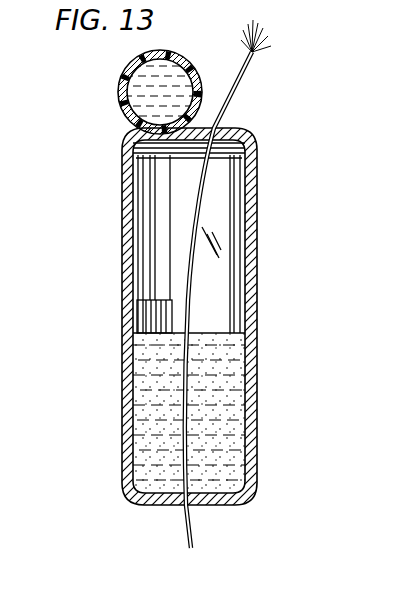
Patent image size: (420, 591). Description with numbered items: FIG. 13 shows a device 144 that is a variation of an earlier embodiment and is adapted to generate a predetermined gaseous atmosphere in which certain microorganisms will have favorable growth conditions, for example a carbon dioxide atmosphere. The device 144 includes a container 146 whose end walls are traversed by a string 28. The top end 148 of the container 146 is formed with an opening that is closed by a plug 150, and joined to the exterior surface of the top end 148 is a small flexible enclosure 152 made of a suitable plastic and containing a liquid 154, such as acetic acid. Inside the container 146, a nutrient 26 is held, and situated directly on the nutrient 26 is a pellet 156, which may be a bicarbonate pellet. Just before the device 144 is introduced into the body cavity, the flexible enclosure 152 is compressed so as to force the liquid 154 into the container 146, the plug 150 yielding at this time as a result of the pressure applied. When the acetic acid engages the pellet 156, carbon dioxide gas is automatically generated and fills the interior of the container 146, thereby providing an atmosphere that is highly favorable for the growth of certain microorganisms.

The container 146 is at (252, 218).
The device 144 is at (118, 290).
The nutrient 26 is at (160, 410).
The plug 150 is at (140, 160).
The pellet 156 is at (140, 322).
The string 28 is at (209, 193).
The flexible enclosure 152 is at (174, 64).
The liquid 154 is at (123, 101).
The top end 148 is at (211, 120).